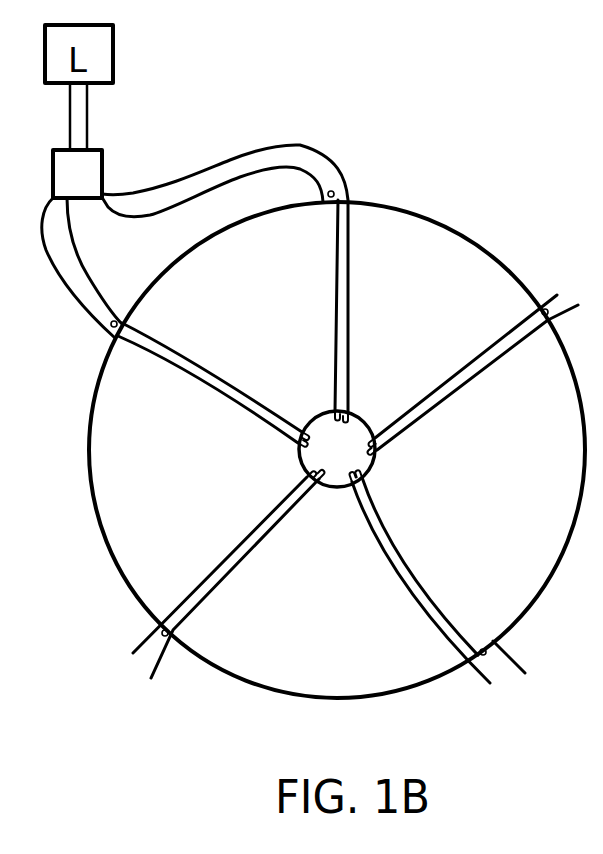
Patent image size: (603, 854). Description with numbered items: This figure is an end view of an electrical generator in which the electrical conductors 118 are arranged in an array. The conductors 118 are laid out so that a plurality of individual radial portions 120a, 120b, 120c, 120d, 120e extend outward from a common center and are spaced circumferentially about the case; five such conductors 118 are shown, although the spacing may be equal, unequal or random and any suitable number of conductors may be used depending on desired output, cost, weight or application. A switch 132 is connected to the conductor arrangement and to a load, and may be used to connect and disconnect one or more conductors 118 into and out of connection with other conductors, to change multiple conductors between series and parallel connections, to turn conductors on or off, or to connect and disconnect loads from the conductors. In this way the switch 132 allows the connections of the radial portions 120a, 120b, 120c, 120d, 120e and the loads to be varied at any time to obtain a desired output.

The electrical conductors 118 is at (333, 387).
The radial portion 120a is at (354, 294).
The radial portion 120b is at (448, 389).
The radial portion 120c is at (436, 587).
The radial portion 120d is at (220, 563).
The radial portion 120e is at (222, 397).
The switch 132 is at (107, 160).